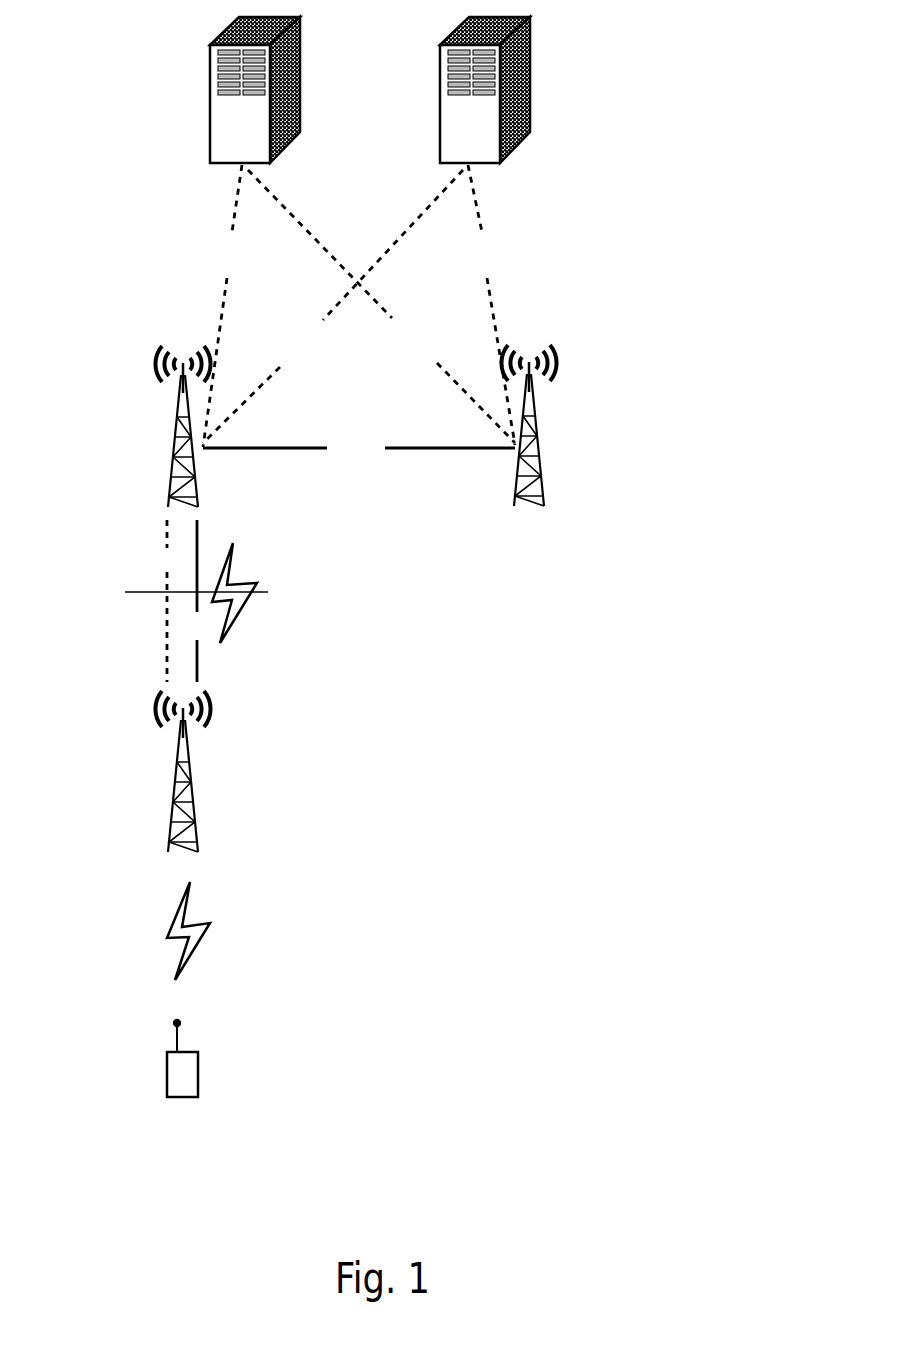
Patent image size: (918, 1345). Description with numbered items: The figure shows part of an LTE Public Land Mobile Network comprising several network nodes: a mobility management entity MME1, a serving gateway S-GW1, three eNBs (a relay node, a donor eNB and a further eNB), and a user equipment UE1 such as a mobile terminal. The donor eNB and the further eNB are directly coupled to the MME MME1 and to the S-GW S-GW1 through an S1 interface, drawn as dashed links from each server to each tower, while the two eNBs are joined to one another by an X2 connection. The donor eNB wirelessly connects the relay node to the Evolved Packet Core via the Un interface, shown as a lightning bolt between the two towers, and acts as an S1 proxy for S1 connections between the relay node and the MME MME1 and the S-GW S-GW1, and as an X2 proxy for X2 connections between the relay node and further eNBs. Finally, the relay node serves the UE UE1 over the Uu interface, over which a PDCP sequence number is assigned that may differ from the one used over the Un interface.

The S-GW S-GW1 is at (297, 136).
The MME MME1 is at (527, 136).
The UE UE1 is at (199, 1095).
The S1 interface S1 is at (337, 423).
The X2 interface X2 is at (351, 560).
The Un interface Un is at (212, 593).
The Uu interface Uu is at (211, 931).